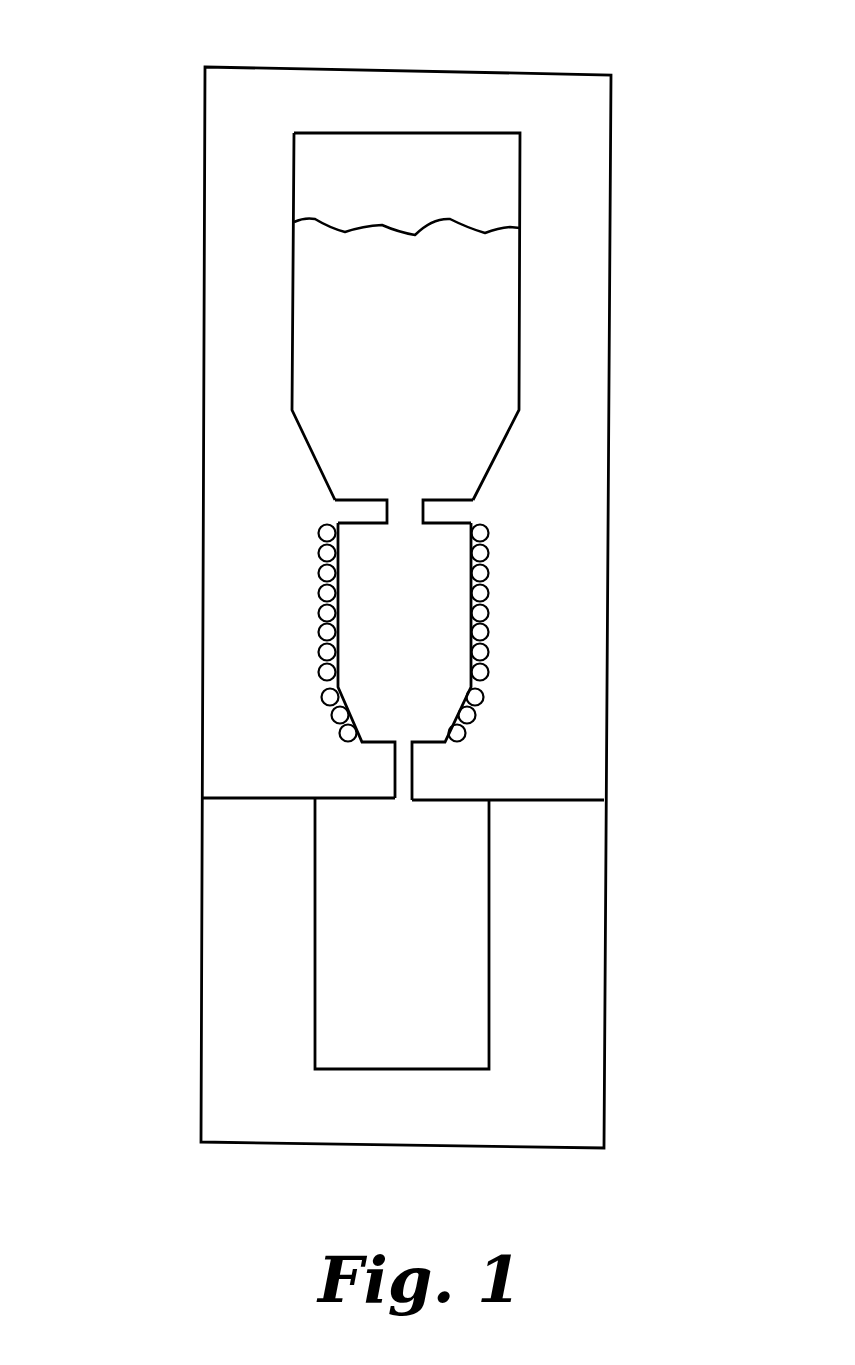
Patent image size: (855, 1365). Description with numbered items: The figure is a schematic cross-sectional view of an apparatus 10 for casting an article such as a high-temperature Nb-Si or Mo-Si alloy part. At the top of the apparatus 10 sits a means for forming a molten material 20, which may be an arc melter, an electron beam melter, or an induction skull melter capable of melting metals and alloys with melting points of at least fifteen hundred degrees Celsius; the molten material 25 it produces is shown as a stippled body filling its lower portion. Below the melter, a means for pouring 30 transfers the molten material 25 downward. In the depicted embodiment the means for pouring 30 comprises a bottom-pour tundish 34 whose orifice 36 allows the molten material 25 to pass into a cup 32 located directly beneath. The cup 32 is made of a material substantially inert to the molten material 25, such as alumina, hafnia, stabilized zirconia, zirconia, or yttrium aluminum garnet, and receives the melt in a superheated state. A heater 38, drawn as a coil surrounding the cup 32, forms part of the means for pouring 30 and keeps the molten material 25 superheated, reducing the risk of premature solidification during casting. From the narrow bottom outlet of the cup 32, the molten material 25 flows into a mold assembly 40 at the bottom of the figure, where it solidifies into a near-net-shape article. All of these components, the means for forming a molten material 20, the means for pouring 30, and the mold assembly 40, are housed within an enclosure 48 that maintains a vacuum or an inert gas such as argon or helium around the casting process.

The apparatus 10 is at (412, 23).
The means for forming a molten material 20 is at (522, 177).
The molten material 25 is at (422, 357).
The means for pouring 30 is at (385, 510).
The cup 32 is at (480, 663).
The bottom-pour tundish 34 is at (473, 501).
The orifice 36 is at (403, 500).
The heater 38 is at (488, 614).
The mold assembly 40 is at (260, 927).
The enclosure 48 is at (611, 277).